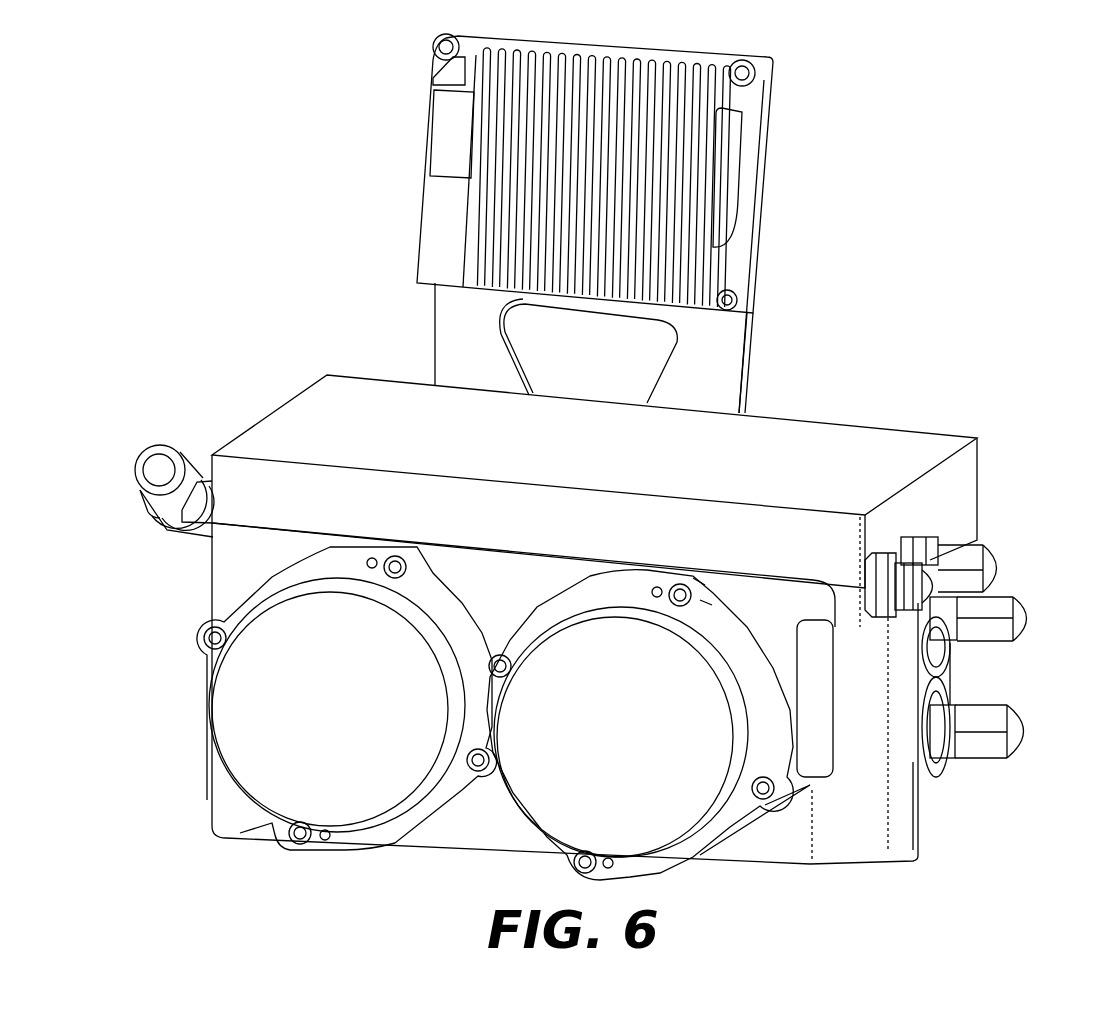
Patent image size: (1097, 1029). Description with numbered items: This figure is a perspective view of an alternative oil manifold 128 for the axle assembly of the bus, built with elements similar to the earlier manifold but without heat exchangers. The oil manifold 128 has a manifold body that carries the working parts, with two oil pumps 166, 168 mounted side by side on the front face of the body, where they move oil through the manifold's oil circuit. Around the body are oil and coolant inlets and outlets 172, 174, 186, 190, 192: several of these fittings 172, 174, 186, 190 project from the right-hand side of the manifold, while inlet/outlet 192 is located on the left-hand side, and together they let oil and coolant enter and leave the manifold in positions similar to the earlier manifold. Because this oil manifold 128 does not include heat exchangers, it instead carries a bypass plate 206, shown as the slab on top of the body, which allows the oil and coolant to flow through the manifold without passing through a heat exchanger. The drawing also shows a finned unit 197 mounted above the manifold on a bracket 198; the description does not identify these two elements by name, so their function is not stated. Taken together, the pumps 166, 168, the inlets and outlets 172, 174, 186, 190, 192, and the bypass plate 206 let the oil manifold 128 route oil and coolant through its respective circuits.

The oil manifold 128 is at (966, 364).
The oil pump 166 is at (336, 851).
The oil pump 168 is at (672, 871).
The oil and coolant inlet/outlet 172 is at (1025, 735).
The oil and coolant inlet/outlet 174 is at (1032, 612).
The oil and coolant inlet/outlet 186 is at (918, 615).
The oil and coolant inlet/outlet 190 is at (1003, 553).
The oil and coolant inlet/outlet 192 is at (140, 490).
The control module with heat sink 197 is at (406, 140).
The mounting bracket 198 is at (762, 352).
The bypass plate 206 is at (982, 462).